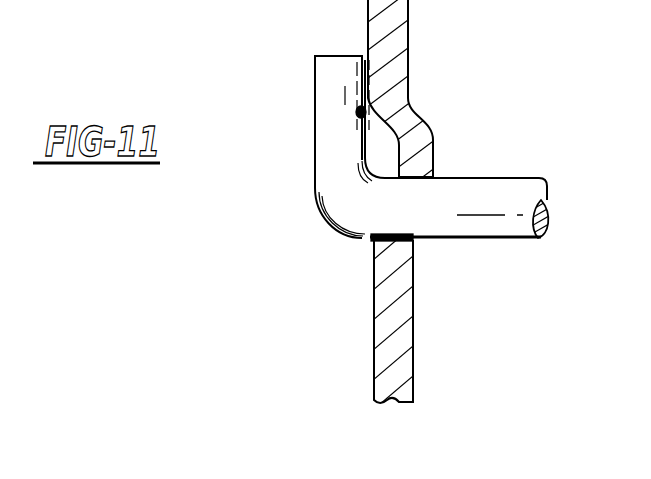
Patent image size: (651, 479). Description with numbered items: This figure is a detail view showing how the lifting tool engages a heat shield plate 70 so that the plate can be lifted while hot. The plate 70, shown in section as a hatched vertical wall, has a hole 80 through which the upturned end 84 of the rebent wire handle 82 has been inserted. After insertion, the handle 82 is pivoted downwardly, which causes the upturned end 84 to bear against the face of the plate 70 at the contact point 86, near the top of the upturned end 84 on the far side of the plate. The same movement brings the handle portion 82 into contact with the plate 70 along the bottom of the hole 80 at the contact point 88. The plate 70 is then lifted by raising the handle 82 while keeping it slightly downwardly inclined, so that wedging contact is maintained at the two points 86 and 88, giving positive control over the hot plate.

The heat shield plate 70 is at (374, 337).
The hole 80 is at (357, 247).
The rebent wire handle 82 is at (497, 188).
The upturned end 84 is at (328, 73).
The contact point 86 is at (355, 112).
The contact point 88 is at (408, 234).